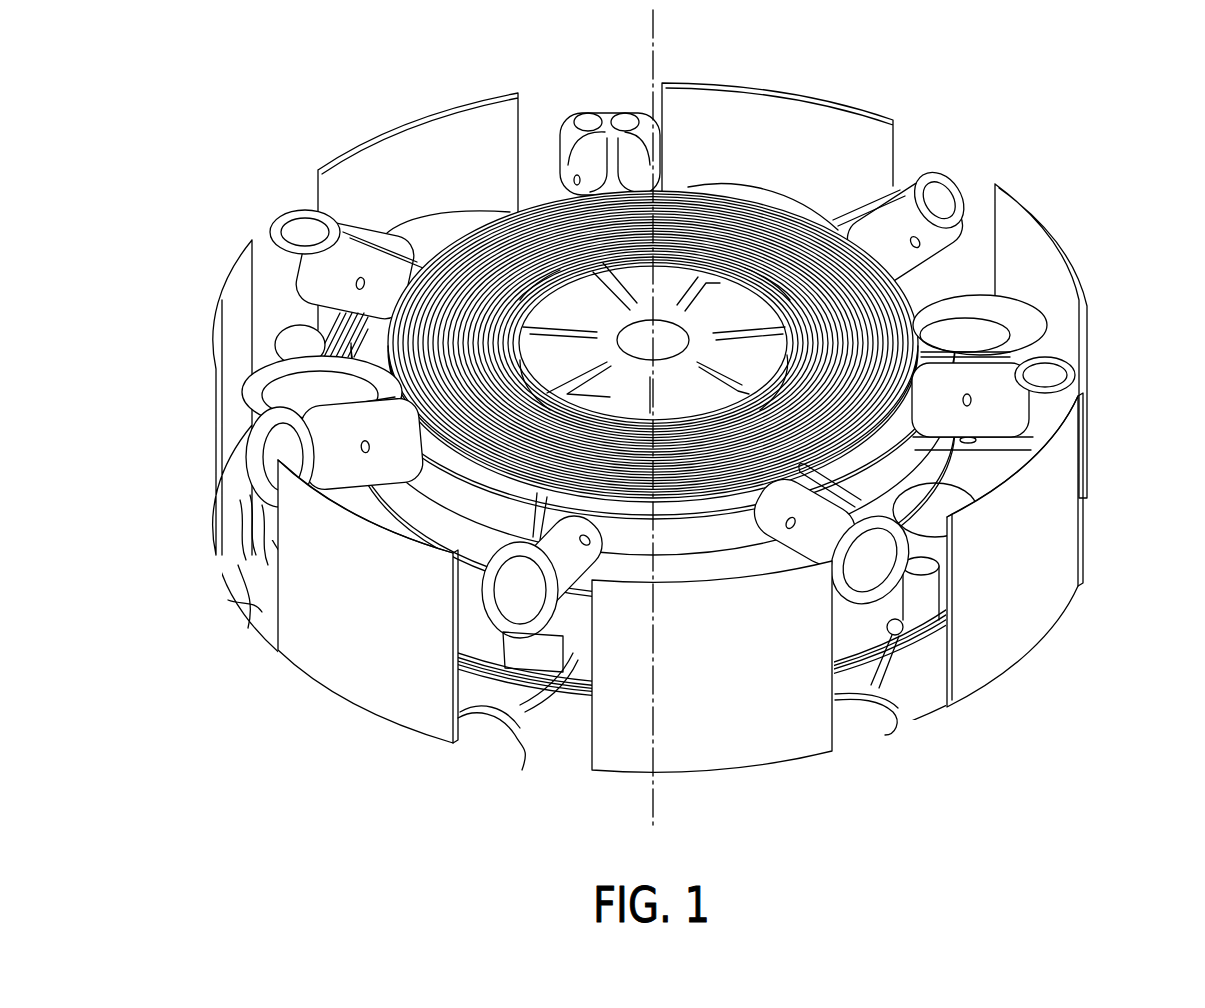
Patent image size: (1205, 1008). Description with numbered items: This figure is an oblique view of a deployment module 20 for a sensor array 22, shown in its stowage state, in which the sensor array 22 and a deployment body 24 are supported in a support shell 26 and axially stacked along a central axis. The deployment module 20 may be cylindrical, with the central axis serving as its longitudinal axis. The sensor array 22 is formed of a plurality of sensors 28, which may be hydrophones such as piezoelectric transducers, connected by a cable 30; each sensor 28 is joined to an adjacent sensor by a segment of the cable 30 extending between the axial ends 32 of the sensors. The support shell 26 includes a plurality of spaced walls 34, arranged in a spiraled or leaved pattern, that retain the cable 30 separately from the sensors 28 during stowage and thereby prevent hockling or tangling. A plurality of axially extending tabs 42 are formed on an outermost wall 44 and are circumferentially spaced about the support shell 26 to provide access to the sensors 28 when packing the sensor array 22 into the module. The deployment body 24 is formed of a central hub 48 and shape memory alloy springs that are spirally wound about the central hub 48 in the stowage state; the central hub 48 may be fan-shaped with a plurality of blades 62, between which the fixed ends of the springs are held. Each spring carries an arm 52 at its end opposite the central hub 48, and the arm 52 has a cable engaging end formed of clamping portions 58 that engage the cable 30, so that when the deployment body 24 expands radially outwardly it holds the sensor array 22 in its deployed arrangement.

The deployment module 20 is at (242, 142).
The sensor array 22 is at (248, 395).
The deployment body 24 is at (865, 328).
The support shell 26 is at (1046, 556).
The sensors 28 is at (1017, 336).
The cable 30 is at (879, 682).
The axial ends 32 is at (898, 628).
The walls 34 is at (550, 712).
The axially extending tabs 42 is at (852, 155).
The outermost wall 44 is at (258, 301).
The central hub 48 is at (570, 308).
The arm 52 is at (934, 230).
The clamping portions 58 is at (250, 455).
The blades 62 is at (567, 393).